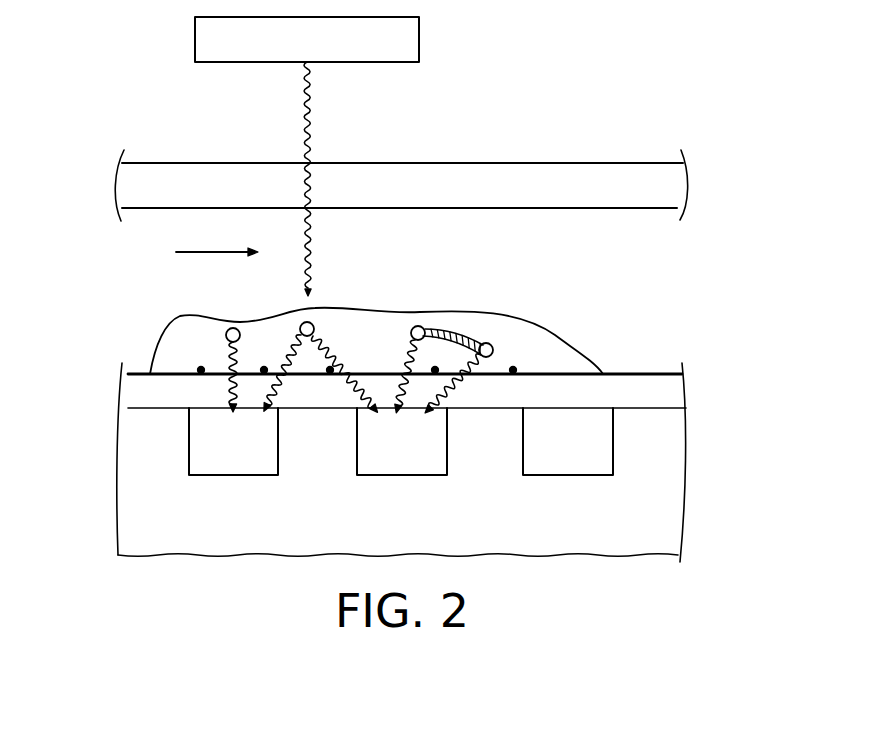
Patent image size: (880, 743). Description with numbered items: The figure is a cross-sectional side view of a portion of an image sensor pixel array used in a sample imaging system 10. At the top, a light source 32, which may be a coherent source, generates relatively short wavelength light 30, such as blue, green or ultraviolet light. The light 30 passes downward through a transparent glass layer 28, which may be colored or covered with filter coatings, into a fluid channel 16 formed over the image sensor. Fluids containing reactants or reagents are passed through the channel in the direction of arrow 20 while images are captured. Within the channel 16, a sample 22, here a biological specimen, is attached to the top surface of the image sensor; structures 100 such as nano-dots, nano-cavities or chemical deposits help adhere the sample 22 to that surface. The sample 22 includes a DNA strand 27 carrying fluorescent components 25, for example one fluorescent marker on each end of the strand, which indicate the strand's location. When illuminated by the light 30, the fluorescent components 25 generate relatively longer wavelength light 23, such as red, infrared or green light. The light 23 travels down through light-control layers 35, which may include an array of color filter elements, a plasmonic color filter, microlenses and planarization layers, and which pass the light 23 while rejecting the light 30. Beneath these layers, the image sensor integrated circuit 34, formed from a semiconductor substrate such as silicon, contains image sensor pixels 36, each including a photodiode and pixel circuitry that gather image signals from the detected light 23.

The system 10 is at (110, 24).
The channel 16 is at (426, 263).
The arrow 20 is at (207, 250).
The sample 22 is at (555, 342).
The light 23 is at (226, 358).
The fluorescent components 25 is at (305, 322).
The DNA strand 27 is at (460, 332).
The glass layer 28 is at (552, 173).
The light 30 is at (304, 107).
The light source 32 is at (349, 53).
The image sensor 34 is at (479, 524).
The light-control layers 35 is at (672, 392).
The image sensor pixels 36 is at (222, 456).
The structures 100 is at (199, 368).